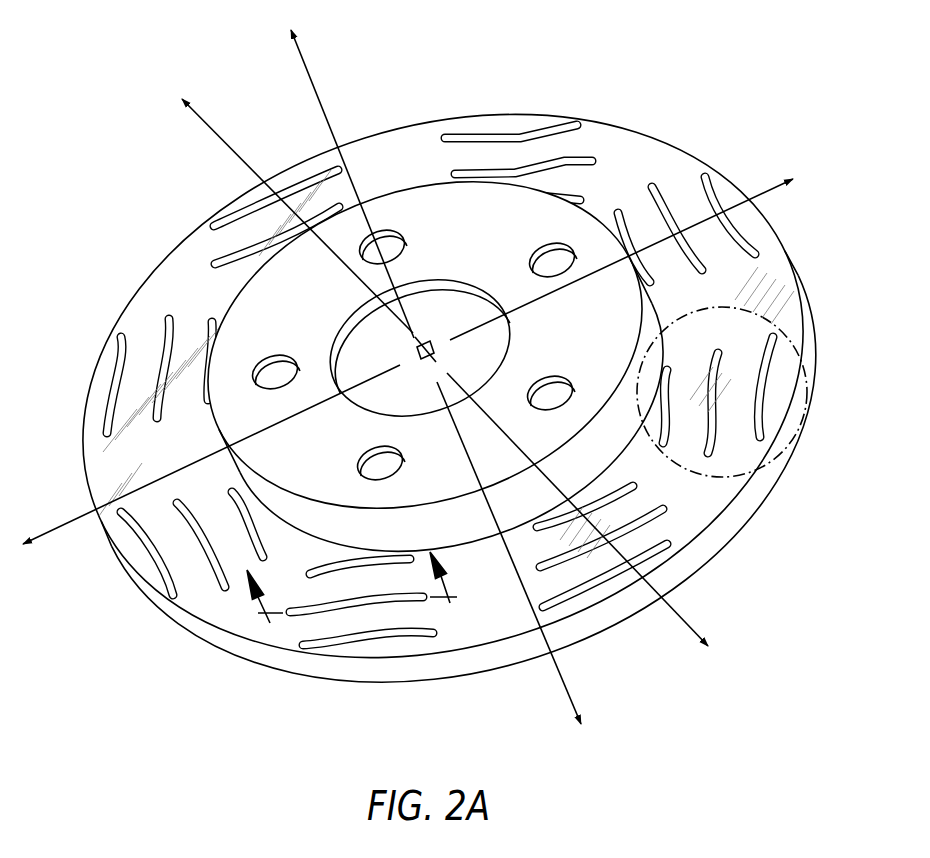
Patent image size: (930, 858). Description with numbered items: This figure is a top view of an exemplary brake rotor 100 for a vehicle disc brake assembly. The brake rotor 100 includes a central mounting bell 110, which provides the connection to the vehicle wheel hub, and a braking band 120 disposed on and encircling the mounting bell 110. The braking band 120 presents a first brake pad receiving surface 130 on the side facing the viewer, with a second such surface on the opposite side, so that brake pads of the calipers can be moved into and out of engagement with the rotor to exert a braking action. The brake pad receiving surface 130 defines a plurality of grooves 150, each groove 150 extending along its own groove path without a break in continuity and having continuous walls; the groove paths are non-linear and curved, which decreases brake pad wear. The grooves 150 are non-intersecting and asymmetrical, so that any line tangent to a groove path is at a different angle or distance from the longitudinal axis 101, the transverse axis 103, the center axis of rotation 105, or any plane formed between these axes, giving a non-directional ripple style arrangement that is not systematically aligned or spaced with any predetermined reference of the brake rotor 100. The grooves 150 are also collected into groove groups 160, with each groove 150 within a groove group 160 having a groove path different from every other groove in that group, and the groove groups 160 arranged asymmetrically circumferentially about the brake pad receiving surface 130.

The brake rotor 100 is at (74, 75).
The longitudinal axis 101 is at (434, 357).
The transverse axis 103 is at (428, 353).
The center axis of rotation 105 is at (425, 362).
The mounting bell 110 is at (428, 208).
The braking band 120 is at (520, 112).
The first brake pad receiving surface 130 is at (196, 452).
The groove 150 is at (703, 173).
The groove group 160 is at (722, 478).